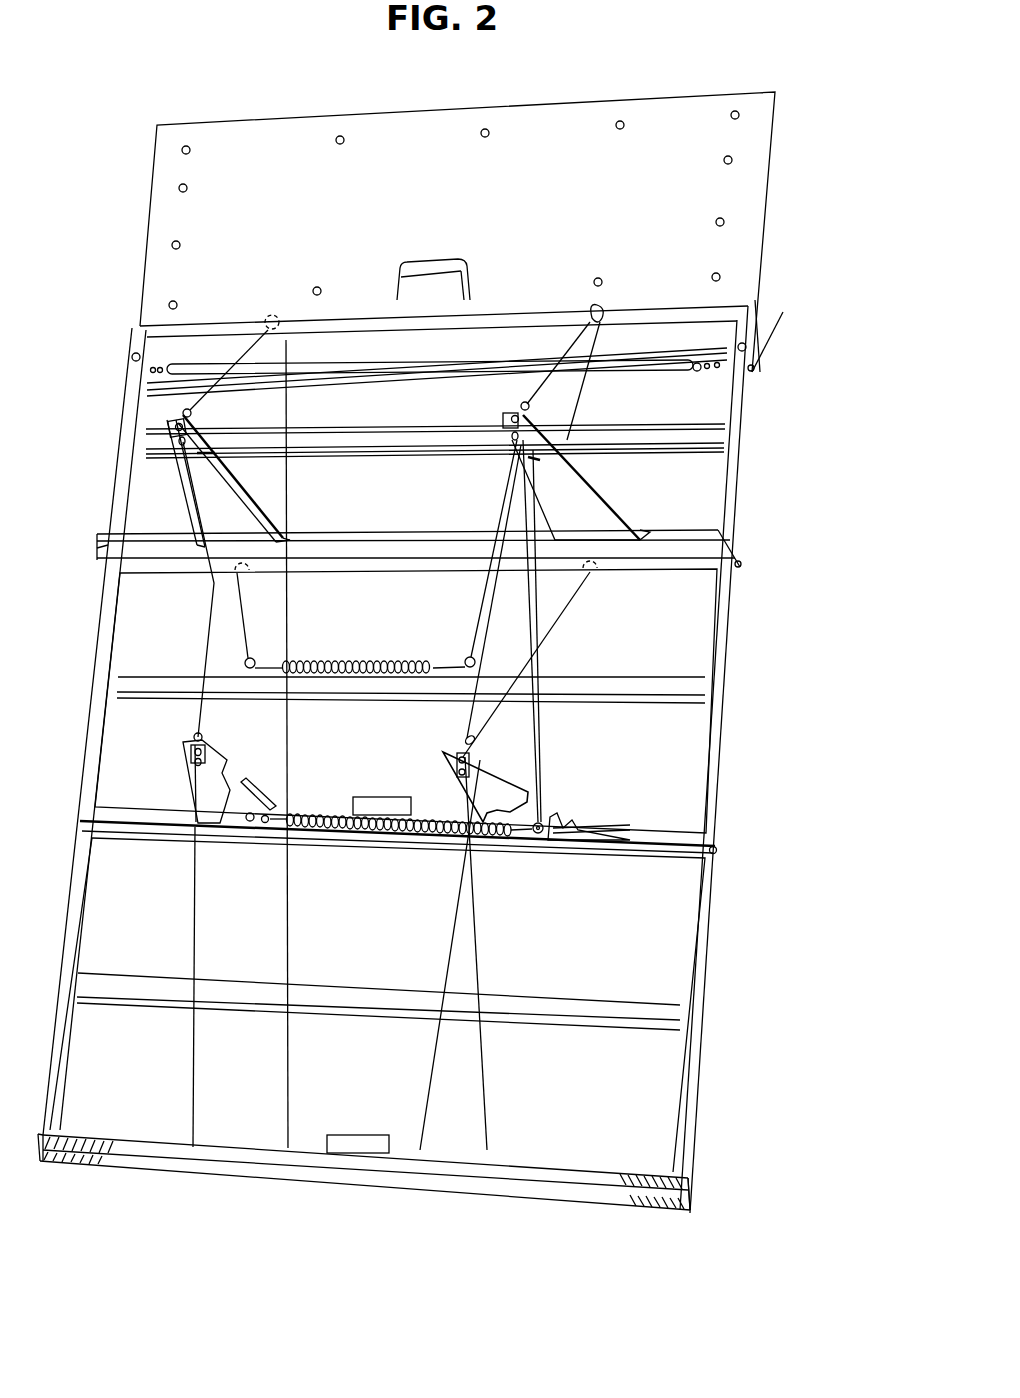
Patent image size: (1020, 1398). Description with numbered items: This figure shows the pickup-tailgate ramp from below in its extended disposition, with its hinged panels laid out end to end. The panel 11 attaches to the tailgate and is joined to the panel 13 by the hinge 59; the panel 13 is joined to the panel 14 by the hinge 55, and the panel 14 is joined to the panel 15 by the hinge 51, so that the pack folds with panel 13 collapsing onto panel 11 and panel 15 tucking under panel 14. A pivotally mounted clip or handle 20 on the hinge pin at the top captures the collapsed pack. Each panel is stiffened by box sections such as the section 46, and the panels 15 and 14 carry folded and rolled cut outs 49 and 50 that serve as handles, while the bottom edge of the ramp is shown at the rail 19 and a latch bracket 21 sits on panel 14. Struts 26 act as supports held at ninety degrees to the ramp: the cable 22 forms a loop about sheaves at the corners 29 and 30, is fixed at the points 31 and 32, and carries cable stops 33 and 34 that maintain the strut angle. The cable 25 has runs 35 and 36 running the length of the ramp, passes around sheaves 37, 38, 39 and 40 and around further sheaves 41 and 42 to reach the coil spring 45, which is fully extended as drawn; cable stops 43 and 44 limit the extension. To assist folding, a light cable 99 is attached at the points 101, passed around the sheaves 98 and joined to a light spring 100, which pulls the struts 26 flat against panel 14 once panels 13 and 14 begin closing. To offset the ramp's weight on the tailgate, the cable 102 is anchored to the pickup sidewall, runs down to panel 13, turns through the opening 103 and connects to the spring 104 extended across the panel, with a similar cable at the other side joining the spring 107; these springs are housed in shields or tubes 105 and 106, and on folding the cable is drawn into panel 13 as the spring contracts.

The panel 11 is at (757, 165).
The panel 13 is at (693, 497).
The panel 14 is at (690, 750).
The panel 15 is at (660, 937).
The bottom rail 19 is at (364, 1196).
The clip or handle 20 is at (428, 265).
The latch bracket 21 is at (210, 765).
The cable 22 is at (196, 960).
The cable 25 is at (184, 413).
The strut 26 is at (233, 516).
The corner 29 is at (597, 576).
The corner 30 is at (258, 575).
The fixing point 31 is at (194, 1186).
The fixing point 32 is at (491, 1186).
The cable stop 33 is at (173, 430).
The cable stop 34 is at (178, 444).
The cable run 35 is at (290, 953).
The cable run 36 is at (455, 965).
The sheave 37 is at (583, 308).
The sheave 38 is at (272, 314).
The sheave 39 is at (424, 1148).
The sheave 40 is at (294, 1140).
The sheave 41 is at (556, 832).
The sheave 42 is at (248, 834).
The cable stop 43 is at (532, 836).
The cable stop 44 is at (272, 796).
The coil spring 45 is at (415, 834).
The strengthening section 46 is at (690, 430).
The cut out 49 is at (362, 1135).
The cut out 50 is at (386, 797).
The hinge 51 is at (722, 847).
The hinge 55 is at (745, 567).
The hinge 59 is at (766, 300).
The sheave 98 is at (251, 655).
The cable 99 is at (215, 583).
The spring 100 is at (368, 660).
The attachment point 101 is at (214, 447).
The cable 102 is at (782, 328).
The opening 103 is at (758, 371).
The spring 104 is at (705, 372).
The shield or tube 105 is at (640, 378).
The shield or tube 106 is at (337, 365).
The spring 107 is at (156, 362).